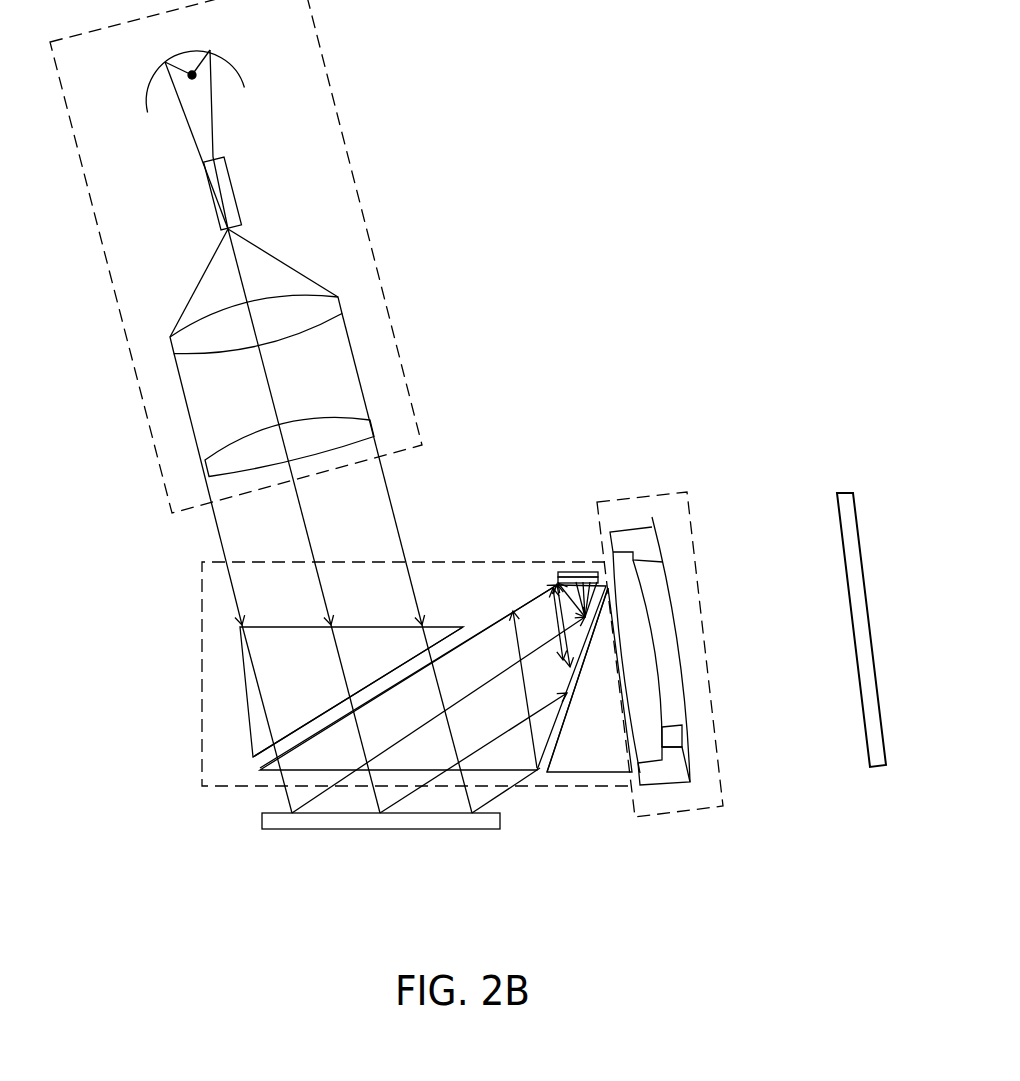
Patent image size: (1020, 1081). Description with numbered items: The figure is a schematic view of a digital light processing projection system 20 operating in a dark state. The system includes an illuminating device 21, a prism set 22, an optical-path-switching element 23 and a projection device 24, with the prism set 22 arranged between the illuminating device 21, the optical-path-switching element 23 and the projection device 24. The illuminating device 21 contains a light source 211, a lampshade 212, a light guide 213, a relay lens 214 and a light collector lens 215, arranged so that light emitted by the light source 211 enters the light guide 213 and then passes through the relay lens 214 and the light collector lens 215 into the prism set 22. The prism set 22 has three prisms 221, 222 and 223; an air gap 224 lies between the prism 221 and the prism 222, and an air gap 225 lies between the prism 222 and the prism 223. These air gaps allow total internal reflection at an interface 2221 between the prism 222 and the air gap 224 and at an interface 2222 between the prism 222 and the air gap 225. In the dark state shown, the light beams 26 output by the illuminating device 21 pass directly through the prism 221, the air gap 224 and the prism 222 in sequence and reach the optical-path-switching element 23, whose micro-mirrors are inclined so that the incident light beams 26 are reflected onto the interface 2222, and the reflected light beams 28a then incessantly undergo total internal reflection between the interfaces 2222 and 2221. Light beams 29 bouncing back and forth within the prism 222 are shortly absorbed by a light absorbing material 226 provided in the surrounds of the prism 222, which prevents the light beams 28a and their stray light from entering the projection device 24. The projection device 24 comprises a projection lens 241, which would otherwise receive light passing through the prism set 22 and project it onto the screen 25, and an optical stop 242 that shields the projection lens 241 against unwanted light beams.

The digital light processing projection system 20 is at (695, 185).
The illuminating device 21 is at (335, 100).
The light source 211 is at (162, 84).
The lampshade 212 is at (233, 54).
The light guide 213 is at (238, 180).
The relay lens 214 is at (345, 299).
The light collector lens 215 is at (372, 428).
The prism set 22 is at (442, 560).
The prism 221 is at (245, 692).
The prism 222 is at (268, 773).
The prism 223 is at (592, 775).
The air gap 224 is at (257, 770).
The interface 2221 is at (515, 608).
The interface 2222 is at (553, 737).
The air gap 225 is at (603, 570).
The light absorbing material 226 is at (568, 572).
The light beams 29 is at (553, 585).
The light beams 26 is at (217, 528).
The light beams 28a is at (312, 797).
The optical-path-switching element 23 is at (395, 830).
The projection device 24 is at (640, 497).
The projection lens 241 is at (667, 725).
The optical stop 242 is at (670, 797).
The screen 25 is at (838, 493).